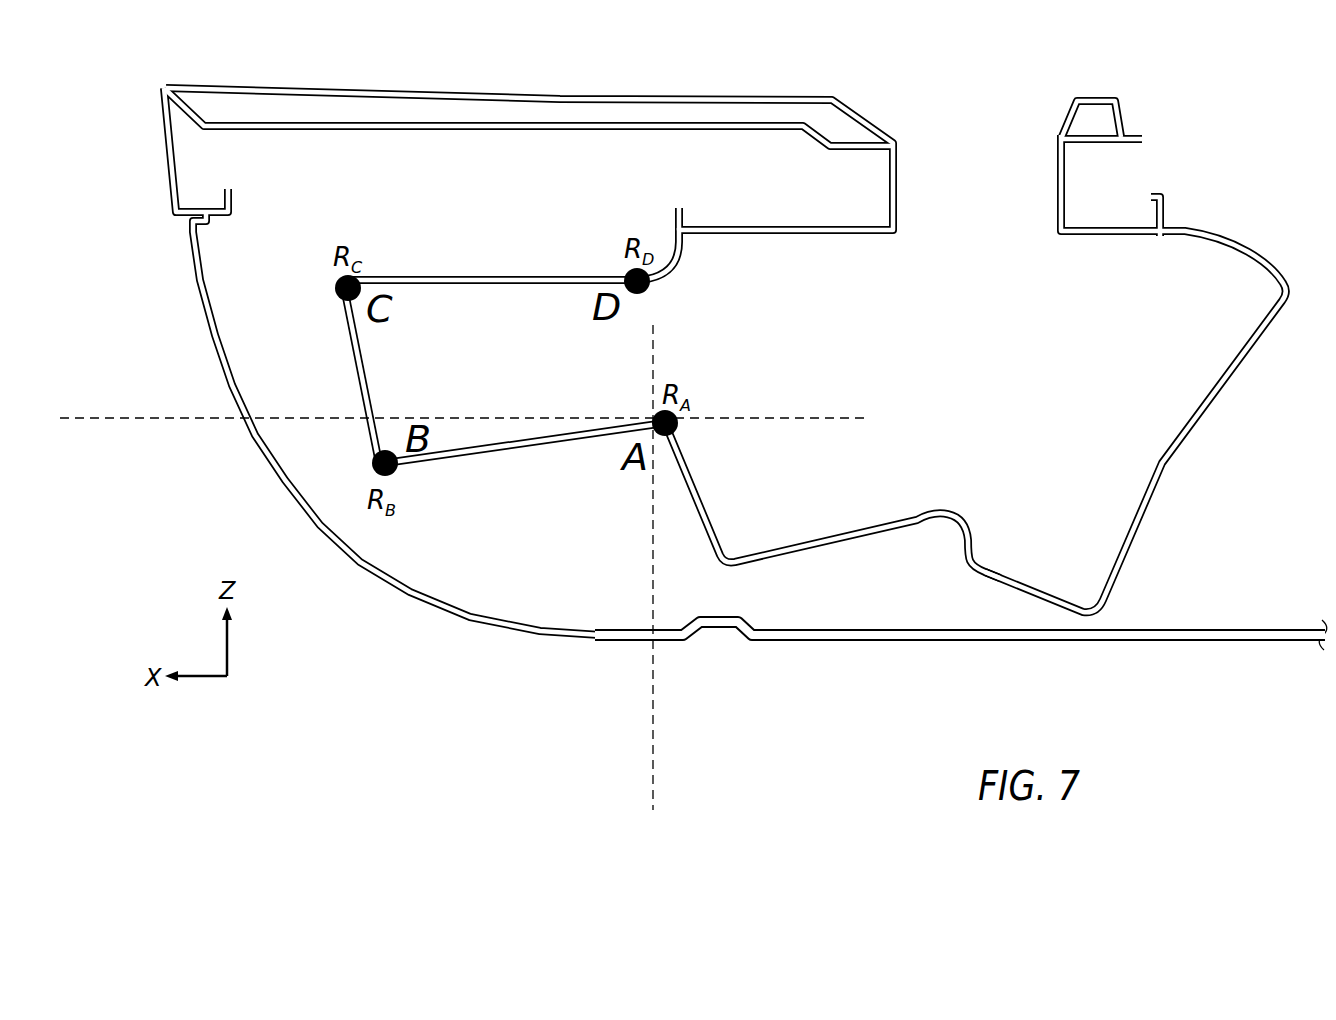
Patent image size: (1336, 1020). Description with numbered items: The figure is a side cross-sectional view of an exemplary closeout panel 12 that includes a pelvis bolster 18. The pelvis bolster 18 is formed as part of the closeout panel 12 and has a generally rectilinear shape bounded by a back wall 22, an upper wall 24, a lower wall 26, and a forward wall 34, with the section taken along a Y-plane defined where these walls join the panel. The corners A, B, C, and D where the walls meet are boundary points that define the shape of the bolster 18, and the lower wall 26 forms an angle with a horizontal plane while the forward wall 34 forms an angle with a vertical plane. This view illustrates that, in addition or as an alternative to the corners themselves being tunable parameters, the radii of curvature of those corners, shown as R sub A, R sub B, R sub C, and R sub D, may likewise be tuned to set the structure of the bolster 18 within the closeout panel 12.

The closeout panel 12 is at (1085, 381).
The pelvis bolster 18 is at (472, 380).
The back wall 22 is at (346, 352).
The upper wall 24 is at (518, 276).
The lower wall 26 is at (513, 452).
The forward wall 34 is at (832, 503).